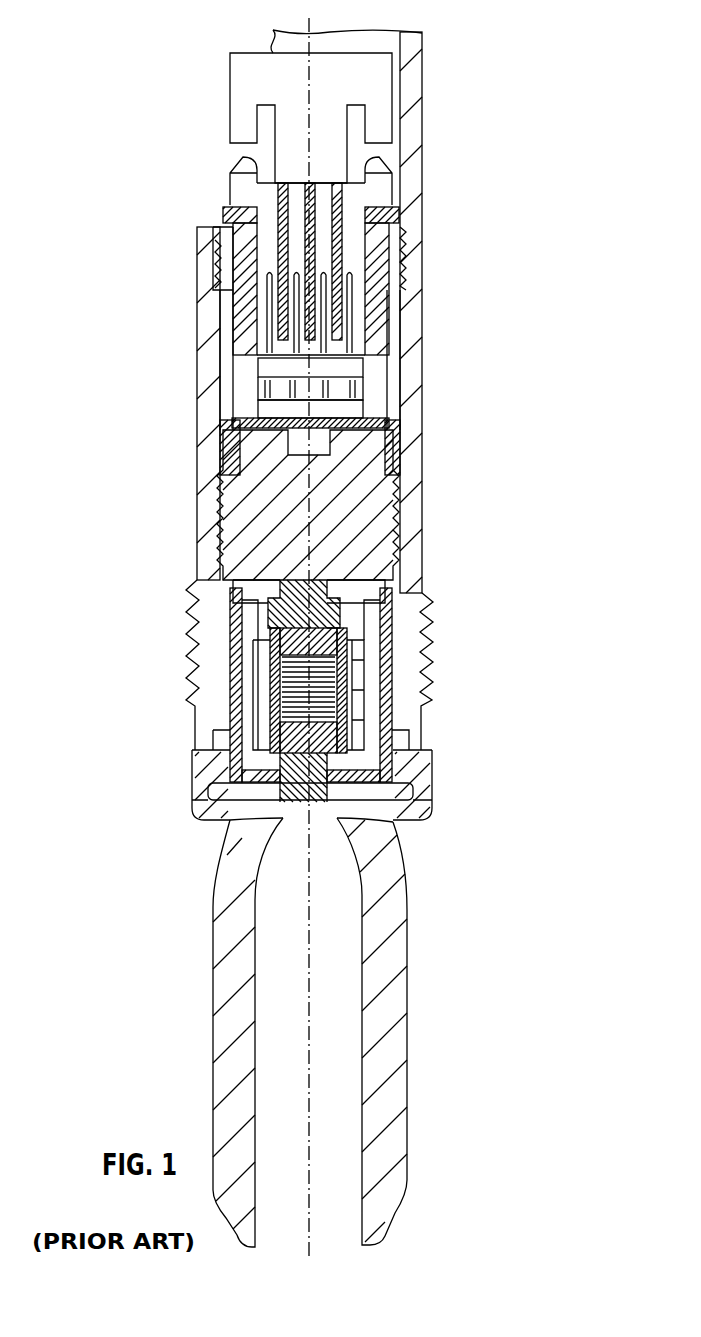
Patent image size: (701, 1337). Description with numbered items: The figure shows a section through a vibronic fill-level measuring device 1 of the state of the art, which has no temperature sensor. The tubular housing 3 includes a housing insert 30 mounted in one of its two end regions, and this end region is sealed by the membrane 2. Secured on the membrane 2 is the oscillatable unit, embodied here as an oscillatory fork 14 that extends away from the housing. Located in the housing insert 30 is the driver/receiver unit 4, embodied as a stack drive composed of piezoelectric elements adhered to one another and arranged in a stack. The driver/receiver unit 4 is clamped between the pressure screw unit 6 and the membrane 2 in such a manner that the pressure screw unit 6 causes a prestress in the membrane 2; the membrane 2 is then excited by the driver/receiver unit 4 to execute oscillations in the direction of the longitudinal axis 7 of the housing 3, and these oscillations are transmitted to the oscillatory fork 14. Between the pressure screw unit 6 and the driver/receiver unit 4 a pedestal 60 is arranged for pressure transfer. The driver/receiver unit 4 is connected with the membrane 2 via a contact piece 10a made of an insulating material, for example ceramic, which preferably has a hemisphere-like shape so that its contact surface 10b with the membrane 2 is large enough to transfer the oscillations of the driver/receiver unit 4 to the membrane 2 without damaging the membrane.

The vibronic fill-level measuring device 1 is at (600, 145).
The membrane 2 is at (393, 823).
The housing 3 is at (215, 507).
The driver/receiver unit 4 is at (240, 665).
The pressure screw unit 6 is at (342, 498).
The longitudinal axis 7 is at (309, 1235).
The contact piece 10a is at (215, 798).
The contact surface 10b is at (230, 824).
The oscillatory fork 14 is at (222, 1032).
The housing insert 30 is at (215, 728).
The pedestal 60 is at (232, 578).